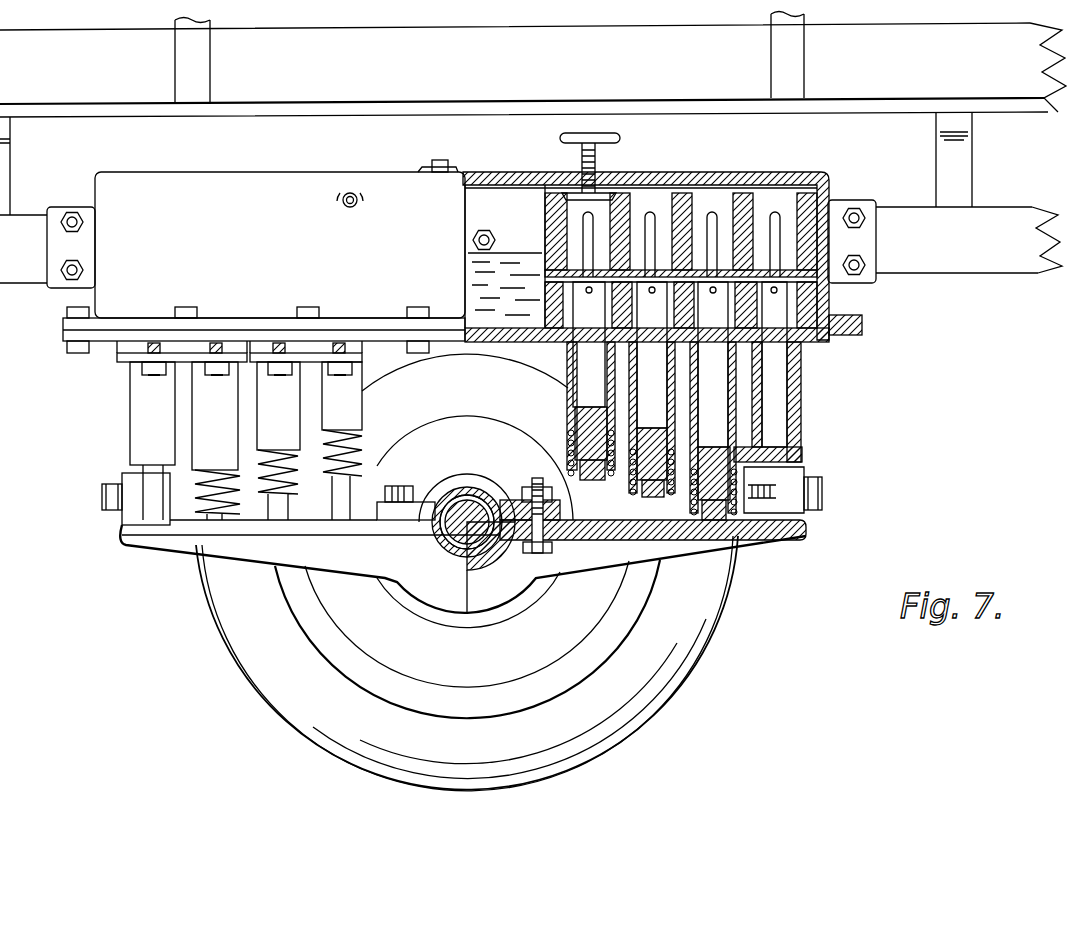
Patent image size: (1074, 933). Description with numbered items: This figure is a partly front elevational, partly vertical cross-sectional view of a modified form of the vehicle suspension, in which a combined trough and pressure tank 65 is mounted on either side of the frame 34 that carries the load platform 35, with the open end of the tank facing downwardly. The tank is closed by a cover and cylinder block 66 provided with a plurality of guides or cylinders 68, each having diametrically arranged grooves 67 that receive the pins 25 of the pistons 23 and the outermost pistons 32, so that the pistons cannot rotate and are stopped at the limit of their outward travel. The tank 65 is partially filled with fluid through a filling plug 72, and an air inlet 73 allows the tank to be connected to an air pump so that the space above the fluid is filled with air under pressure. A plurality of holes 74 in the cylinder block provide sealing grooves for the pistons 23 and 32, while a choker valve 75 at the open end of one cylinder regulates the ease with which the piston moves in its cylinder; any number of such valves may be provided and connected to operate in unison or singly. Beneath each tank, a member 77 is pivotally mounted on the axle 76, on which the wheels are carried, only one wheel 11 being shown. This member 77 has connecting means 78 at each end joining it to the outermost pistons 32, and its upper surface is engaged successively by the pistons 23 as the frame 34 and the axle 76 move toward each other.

The wheel 11 is at (629, 697).
The piston 23 is at (345, 402).
The pin 25 is at (774, 300).
The piston 32 is at (143, 424).
The frame 34 is at (1020, 193).
The load platform 35 is at (856, 103).
The combined trough and pressure tank 65 is at (508, 197).
The cover and cylinder block 66 is at (831, 338).
The groove 67 is at (771, 210).
The guide or cylinder 68 is at (784, 220).
The filling plug 72 is at (446, 158).
The air inlet 73 is at (350, 192).
The hole 74 is at (800, 282).
The choker valve 75 is at (597, 193).
The axle 76 is at (453, 543).
The member 77 is at (245, 540).
The connecting means 78 is at (130, 517).